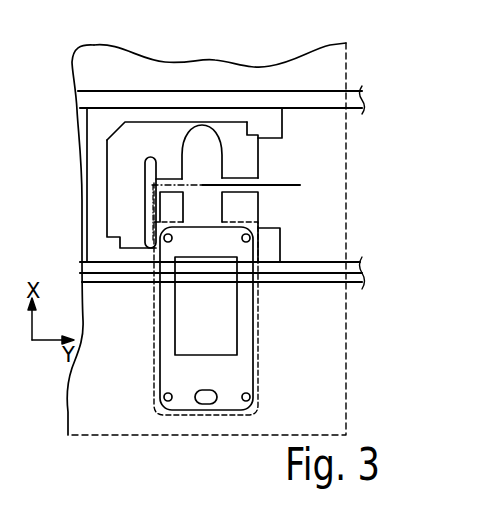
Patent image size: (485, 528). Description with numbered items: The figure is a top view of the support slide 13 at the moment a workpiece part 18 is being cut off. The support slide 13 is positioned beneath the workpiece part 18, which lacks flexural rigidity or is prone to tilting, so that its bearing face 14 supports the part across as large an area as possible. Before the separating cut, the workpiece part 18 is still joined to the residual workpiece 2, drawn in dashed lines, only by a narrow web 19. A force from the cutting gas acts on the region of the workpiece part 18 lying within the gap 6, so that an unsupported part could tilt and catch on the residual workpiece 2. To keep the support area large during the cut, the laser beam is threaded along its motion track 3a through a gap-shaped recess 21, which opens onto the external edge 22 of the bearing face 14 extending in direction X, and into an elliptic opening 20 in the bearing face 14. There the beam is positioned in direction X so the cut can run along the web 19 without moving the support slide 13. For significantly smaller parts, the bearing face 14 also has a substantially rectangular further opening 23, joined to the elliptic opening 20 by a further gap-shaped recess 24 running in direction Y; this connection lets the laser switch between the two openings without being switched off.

The residual workpiece 2 is at (178, 436).
The motion track 3a is at (250, 183).
The gap 6 is at (322, 134).
The support slide 13 is at (84, 135).
The bearing face 14 is at (158, 140).
The workpiece part 18 is at (185, 377).
The web 19 is at (207, 222).
The elliptic opening 20 is at (204, 157).
The gap-shaped recess 21 is at (285, 185).
The external edge 22 is at (260, 199).
The further opening 23 is at (147, 202).
The further gap-shaped recess 24 is at (170, 178).